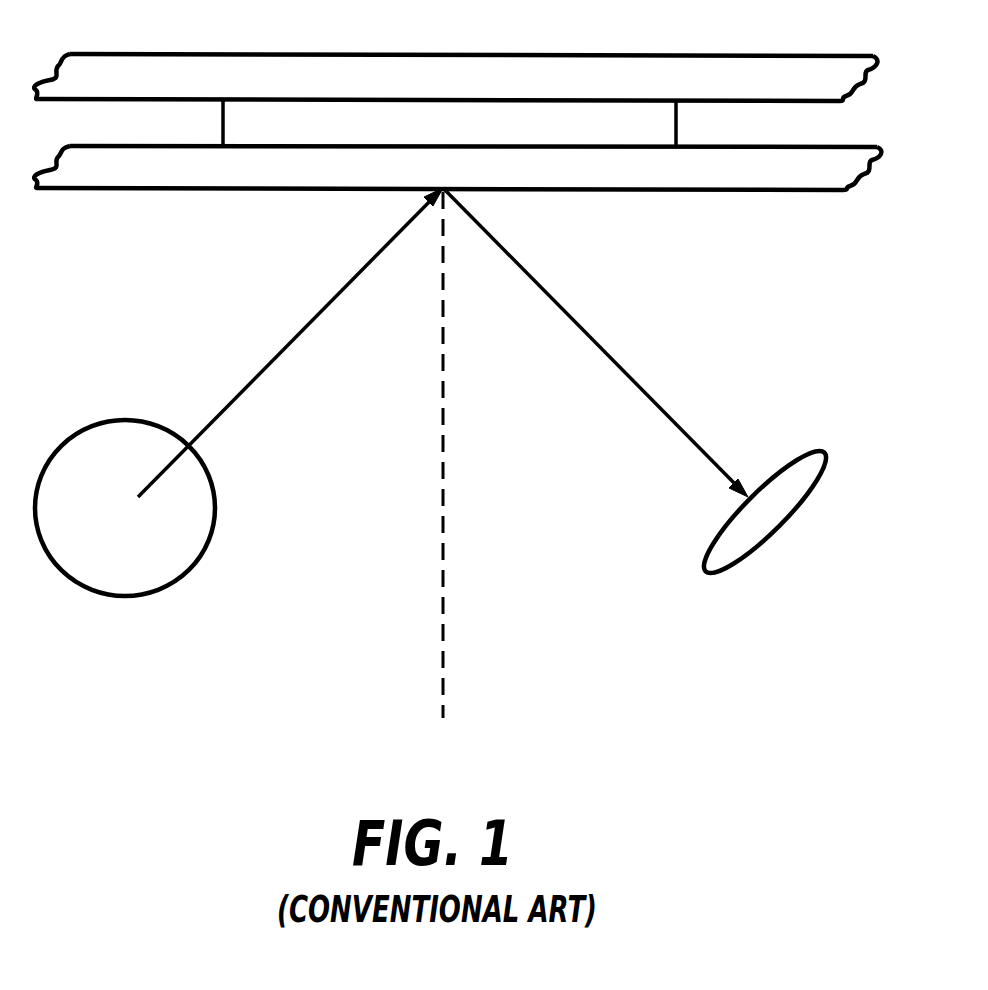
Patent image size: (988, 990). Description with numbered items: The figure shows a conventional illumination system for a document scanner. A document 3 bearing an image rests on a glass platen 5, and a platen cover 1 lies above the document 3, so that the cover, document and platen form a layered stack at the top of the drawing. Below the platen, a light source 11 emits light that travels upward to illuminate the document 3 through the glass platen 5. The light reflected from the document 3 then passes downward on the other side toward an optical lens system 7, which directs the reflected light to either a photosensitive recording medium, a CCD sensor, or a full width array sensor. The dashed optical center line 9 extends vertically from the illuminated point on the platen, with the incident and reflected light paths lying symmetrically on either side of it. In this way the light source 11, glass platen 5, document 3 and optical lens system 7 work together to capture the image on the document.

The platen cover 1 is at (787, 66).
The document 3 is at (668, 120).
The glass platen 5 is at (834, 158).
The optical lens system 7 is at (808, 452).
The optical center line 9 is at (445, 566).
The light source 11 is at (200, 490).